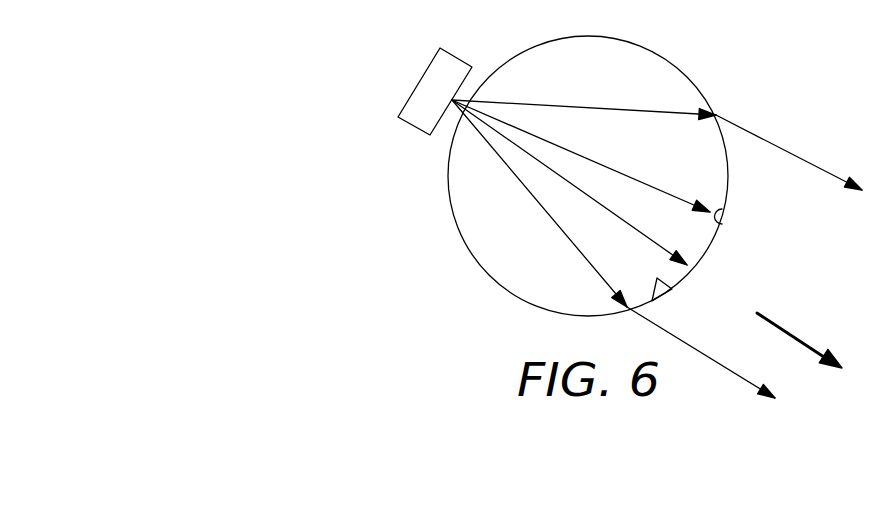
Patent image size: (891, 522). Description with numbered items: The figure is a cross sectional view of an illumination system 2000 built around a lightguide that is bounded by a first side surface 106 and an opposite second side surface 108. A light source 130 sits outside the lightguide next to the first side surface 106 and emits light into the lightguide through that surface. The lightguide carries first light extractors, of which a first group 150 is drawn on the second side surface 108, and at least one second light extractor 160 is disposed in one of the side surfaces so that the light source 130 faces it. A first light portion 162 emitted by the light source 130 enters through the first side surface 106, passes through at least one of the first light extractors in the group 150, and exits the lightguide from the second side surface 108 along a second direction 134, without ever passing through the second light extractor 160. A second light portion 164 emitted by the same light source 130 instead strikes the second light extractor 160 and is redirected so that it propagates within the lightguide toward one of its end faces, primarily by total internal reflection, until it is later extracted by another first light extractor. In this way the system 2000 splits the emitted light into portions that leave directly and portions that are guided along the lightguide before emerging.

The illumination system 2000 is at (326, 61).
The first side surface 106 is at (449, 173).
The light source 130 is at (410, 130).
The second side surface 108 is at (731, 173).
The first group of first light extractors 150 is at (725, 219).
The second light extractor 160 is at (680, 307).
The first light portion 162 is at (602, 208).
The second light portion 164 is at (628, 173).
The second direction 134 is at (792, 333).